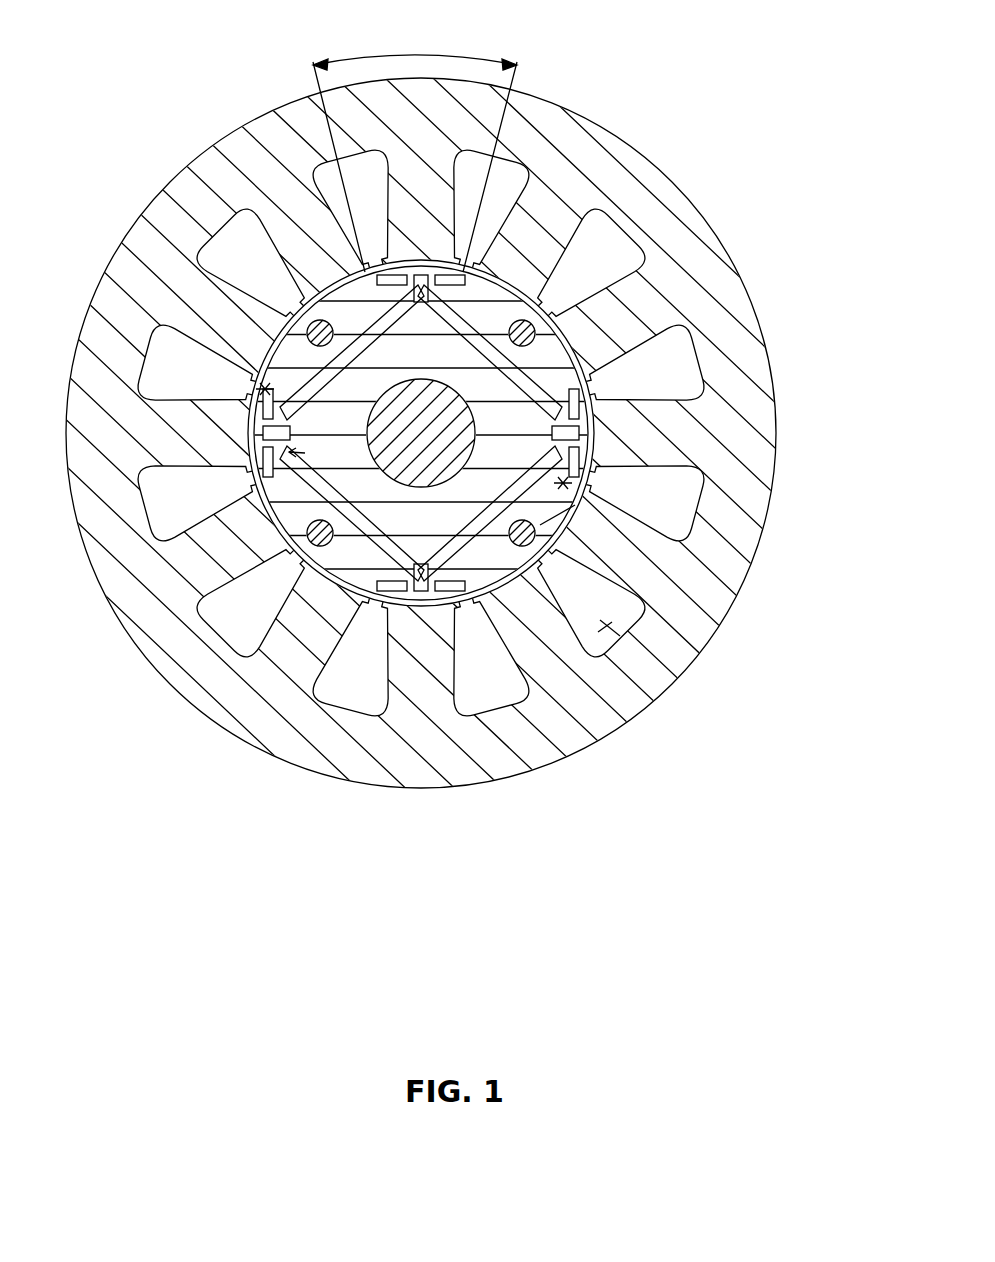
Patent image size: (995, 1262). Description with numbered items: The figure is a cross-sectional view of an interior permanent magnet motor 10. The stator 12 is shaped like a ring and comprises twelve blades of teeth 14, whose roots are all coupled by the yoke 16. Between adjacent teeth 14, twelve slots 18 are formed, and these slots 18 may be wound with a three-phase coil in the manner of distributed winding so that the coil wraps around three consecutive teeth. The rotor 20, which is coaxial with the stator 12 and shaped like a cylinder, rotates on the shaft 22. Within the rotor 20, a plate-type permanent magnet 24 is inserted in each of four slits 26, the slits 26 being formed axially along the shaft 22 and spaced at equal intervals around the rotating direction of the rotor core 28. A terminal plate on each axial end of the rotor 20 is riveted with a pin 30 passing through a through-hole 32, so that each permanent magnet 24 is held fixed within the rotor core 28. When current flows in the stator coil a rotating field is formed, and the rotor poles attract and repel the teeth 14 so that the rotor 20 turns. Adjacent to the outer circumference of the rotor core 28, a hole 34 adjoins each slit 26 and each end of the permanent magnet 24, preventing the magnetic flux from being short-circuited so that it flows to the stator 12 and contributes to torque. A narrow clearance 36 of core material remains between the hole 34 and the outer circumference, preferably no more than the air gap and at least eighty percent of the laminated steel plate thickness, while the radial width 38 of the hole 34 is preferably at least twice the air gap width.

The interior permanent magnet motor 10 is at (497, 512).
The stator 12 is at (703, 217).
The blade of teeth 14 is at (527, 233).
The yoke 16 is at (628, 182).
The slot 18 is at (605, 627).
The rotor 20 is at (590, 392).
The shaft 22 is at (417, 470).
The permanent magnet 24 is at (350, 552).
The slit 26 is at (323, 477).
The rotor core 28 is at (560, 512).
The pin 30 is at (521, 542).
The through-hole 32 is at (610, 628).
The hole 34 is at (413, 268).
The clearance 36 is at (250, 388).
The width 38 is at (585, 485).